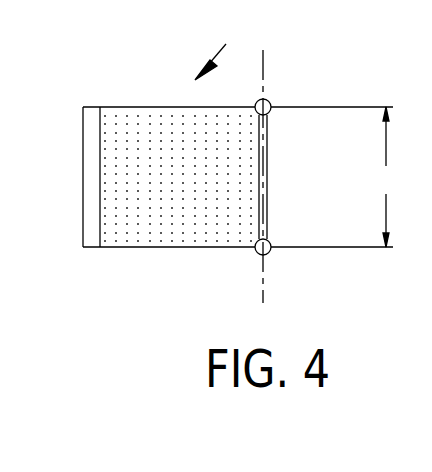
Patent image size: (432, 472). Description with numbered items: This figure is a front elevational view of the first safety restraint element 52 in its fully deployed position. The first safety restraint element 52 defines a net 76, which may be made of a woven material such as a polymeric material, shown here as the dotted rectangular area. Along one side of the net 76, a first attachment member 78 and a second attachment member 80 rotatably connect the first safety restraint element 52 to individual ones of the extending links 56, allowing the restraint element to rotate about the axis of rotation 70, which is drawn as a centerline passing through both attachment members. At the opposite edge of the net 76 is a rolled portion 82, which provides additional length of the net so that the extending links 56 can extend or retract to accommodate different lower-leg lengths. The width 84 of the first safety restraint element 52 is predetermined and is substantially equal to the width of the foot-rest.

The first safety restraint element 52 is at (226, 44).
The extending links 56 is at (178, 106).
The axis of rotation 70 is at (264, 78).
The net 76 is at (167, 222).
The first attachment member 78 is at (264, 109).
The second attachment member 80 is at (265, 245).
The rolled portion 82 is at (91, 141).
The width 84 is at (385, 177).